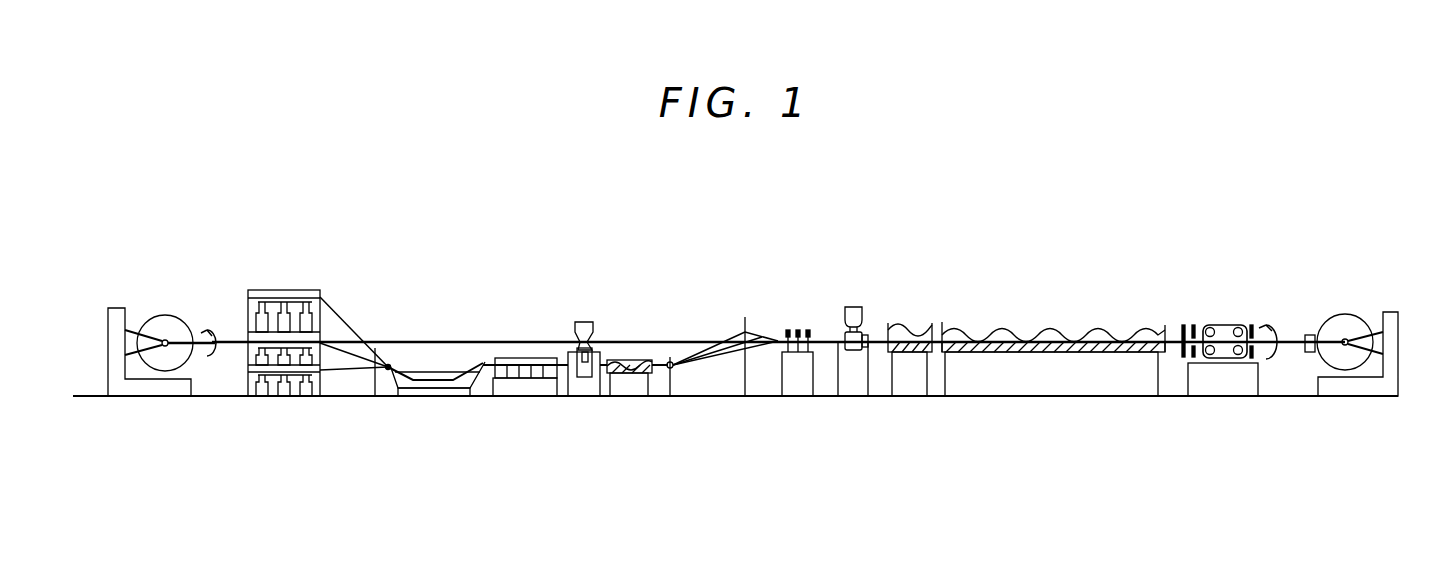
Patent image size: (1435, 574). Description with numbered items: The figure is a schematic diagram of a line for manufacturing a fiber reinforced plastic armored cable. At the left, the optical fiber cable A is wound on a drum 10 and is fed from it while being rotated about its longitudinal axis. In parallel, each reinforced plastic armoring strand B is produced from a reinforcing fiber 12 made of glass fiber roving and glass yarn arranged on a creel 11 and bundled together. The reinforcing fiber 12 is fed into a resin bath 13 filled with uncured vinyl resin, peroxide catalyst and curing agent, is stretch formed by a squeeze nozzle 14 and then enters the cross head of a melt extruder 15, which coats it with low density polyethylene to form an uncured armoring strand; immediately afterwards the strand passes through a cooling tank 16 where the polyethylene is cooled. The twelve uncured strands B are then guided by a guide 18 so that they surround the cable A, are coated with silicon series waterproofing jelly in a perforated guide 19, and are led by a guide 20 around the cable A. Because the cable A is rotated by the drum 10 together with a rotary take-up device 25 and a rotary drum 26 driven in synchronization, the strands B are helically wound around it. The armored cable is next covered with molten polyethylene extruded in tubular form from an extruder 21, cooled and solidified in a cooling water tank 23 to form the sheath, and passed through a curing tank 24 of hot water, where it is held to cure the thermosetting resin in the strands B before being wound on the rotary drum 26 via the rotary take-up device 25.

The drum 10 is at (167, 318).
The optical fiber cable A is at (237, 342).
The creel 11 is at (322, 297).
The reinforcing fiber 12 is at (341, 318).
The resin bath 13 is at (435, 377).
The squeeze nozzle 14 is at (533, 358).
The melt extruder 15 is at (587, 324).
The cooling tank 16 is at (628, 374).
The guide 18 is at (670, 356).
The reinforced plastic armoring strands B is at (698, 349).
The perforated guide 19 is at (748, 317).
The guide 20 is at (804, 346).
The extruder 21 is at (862, 307).
The cooling water tank 23 is at (913, 325).
The curing tank 24 is at (1053, 330).
The rotary take-up device 25 is at (1256, 325).
The rotary drum 26 is at (1350, 315).